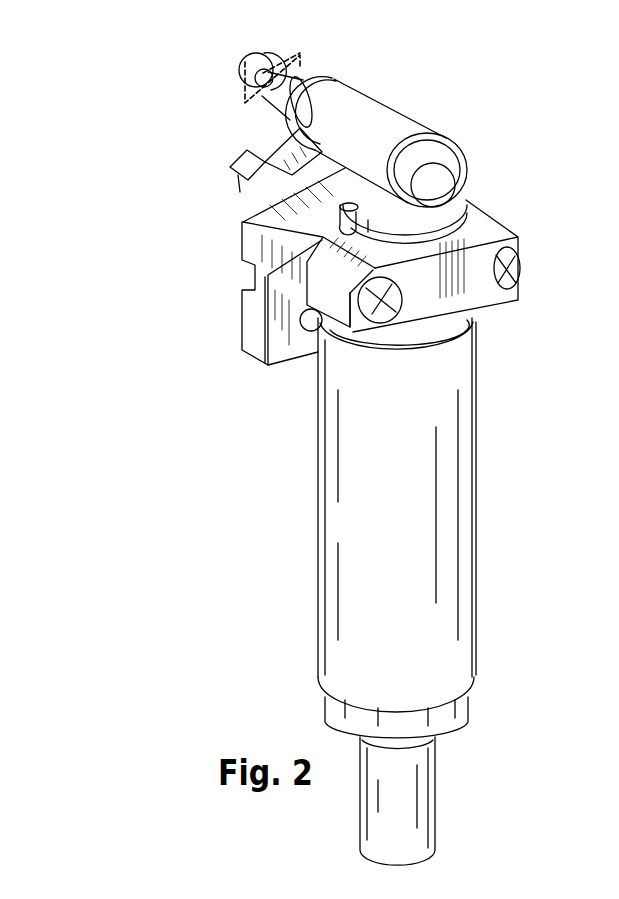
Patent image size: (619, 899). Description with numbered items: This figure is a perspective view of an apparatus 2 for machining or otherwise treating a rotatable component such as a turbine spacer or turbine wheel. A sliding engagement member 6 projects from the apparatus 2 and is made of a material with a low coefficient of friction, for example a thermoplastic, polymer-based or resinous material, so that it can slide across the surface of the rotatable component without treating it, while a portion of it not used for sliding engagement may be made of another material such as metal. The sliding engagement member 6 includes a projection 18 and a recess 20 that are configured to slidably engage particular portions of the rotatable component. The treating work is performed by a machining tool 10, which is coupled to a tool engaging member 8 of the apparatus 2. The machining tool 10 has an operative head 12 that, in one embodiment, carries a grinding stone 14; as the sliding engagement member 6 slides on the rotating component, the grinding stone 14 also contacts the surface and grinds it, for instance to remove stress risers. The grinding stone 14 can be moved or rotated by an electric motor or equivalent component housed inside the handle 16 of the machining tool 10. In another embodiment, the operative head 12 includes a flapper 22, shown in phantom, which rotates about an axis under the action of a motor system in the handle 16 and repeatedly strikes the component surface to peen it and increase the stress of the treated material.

The apparatus 2 is at (228, 346).
The sliding engagement member 6 is at (243, 204).
The tool engaging member 8 is at (468, 232).
The machining tool 10 is at (403, 120).
The operative head 12 is at (318, 92).
The grinding stone 14 is at (245, 65).
The handle 16 is at (425, 644).
The projection 18 is at (245, 167).
The recess 20 is at (272, 150).
The flapper 22 is at (243, 99).